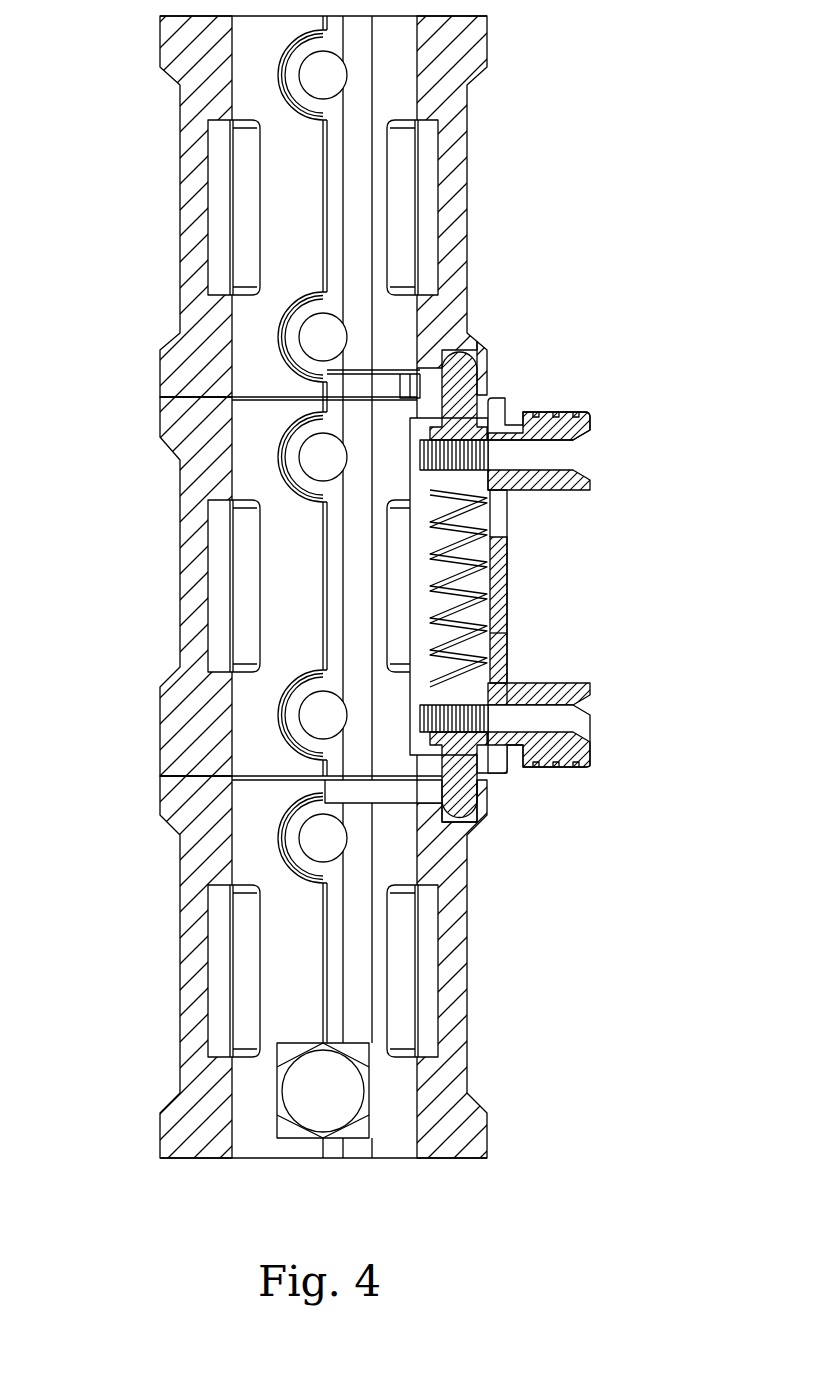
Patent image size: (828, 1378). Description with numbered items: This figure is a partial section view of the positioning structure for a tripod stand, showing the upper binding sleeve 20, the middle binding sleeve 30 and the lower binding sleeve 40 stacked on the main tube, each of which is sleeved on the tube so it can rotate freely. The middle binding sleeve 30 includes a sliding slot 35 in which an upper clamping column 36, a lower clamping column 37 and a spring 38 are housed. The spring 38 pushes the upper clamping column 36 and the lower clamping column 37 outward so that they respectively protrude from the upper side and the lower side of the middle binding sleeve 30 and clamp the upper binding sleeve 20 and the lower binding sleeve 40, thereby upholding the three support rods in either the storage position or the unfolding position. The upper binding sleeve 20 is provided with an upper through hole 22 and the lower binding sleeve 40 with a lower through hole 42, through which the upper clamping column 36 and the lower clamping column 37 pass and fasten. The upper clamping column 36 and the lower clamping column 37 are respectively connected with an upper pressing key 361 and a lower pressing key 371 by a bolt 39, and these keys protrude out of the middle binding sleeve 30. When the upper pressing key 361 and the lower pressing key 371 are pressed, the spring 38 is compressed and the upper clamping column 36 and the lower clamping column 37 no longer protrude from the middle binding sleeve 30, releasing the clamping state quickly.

The upper binding sleeve 20 is at (168, 186).
The middle binding sleeve 30 is at (156, 572).
The lower binding sleeve 40 is at (170, 981).
The upper through hole 22 is at (480, 348).
The sliding slot 35 is at (490, 657).
The upper clamping column 36 is at (477, 367).
The lower clamping column 37 is at (467, 798).
The spring 38 is at (507, 577).
The bolt 39 is at (585, 460).
The upper pressing key 361 is at (590, 416).
The lower pressing key 371 is at (590, 683).
The lower through hole 42 is at (472, 820).